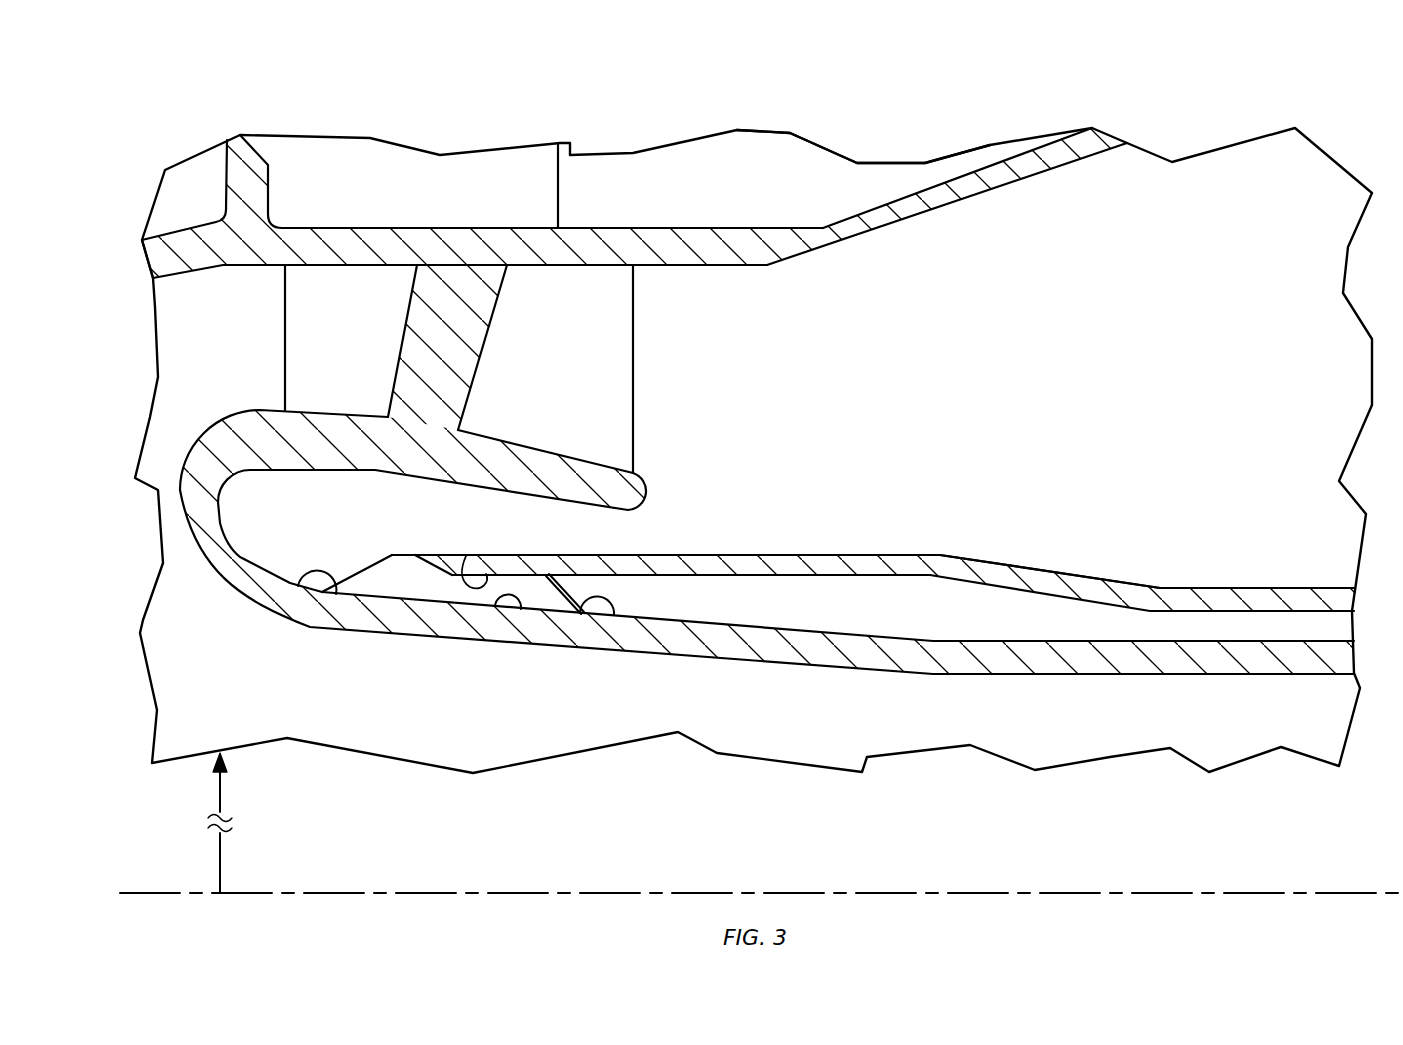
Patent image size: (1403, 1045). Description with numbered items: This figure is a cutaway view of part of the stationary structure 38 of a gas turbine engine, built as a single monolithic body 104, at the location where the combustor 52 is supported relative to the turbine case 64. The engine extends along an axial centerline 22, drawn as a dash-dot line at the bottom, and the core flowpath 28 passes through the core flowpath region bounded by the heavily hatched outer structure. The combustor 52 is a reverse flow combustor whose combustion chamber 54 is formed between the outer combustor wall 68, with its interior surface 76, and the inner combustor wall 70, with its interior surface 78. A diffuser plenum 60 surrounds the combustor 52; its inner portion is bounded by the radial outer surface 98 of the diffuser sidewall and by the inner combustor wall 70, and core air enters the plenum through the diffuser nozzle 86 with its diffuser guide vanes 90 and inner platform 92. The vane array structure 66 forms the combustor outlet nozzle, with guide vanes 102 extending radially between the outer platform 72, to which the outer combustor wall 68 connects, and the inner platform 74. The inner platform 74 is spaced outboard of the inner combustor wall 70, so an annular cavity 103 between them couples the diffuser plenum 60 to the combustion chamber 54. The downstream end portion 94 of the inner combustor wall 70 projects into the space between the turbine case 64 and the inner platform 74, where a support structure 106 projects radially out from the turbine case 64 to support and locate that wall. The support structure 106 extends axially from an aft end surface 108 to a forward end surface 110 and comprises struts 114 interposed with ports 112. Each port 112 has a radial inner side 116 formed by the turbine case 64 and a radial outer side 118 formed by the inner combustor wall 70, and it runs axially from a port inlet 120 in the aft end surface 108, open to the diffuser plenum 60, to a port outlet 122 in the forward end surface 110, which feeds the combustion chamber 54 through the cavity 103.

The axial centerline 22 is at (135, 890).
The core flowpath 28 is at (753, 450).
The combustion chamber 54 is at (1053, 379).
The stationary structure 38 is at (1284, 66).
The monolithic body 104 is at (1250, 94).
The combustor 52 is at (950, 165).
The diffuser plenum 60 is at (803, 160).
The turbine case 64 is at (870, 680).
The vane array structure 66 is at (660, 363).
The outer combustor wall 68 is at (1012, 165).
The inner combustor wall 70 is at (982, 560).
The outer platform 72 is at (374, 228).
The inner platform 74 is at (414, 472).
The interior surface 76 is at (930, 212).
The interior surface 78 is at (846, 555).
The diffuser nozzle 86 is at (605, 180).
The diffuser guide vanes 90 is at (270, 177).
The inner platform 92 is at (185, 278).
The downstream end portion 94 is at (508, 555).
The radial outer surface 98 is at (853, 635).
The guide vanes 102 is at (487, 343).
The cavity 103 is at (366, 537).
The support structure 106 is at (312, 548).
The aft end surface 108 is at (613, 613).
The forward end surface 110 is at (367, 563).
The ports 112 is at (443, 598).
The struts 114 is at (582, 588).
The radial inner side 116 is at (517, 615).
The radial outer side 118 is at (466, 556).
The port inlet 120 is at (570, 575).
The port outlet 122 is at (300, 578).